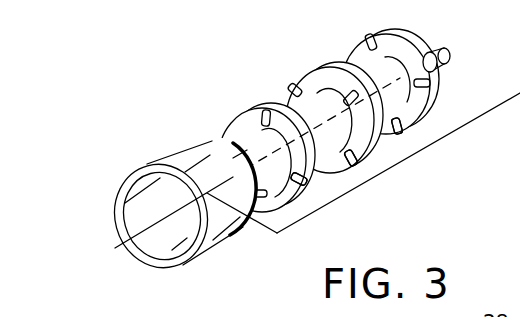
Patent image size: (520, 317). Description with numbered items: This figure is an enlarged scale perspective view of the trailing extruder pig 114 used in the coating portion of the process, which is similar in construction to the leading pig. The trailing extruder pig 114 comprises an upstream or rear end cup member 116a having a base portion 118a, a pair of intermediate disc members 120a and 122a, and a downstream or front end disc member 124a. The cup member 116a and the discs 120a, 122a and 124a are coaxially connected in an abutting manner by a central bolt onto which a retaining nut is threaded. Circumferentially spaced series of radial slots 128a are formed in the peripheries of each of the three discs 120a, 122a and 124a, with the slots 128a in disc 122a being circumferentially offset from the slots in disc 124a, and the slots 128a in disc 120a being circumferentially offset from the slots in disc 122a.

The trailing extruder pig 114 is at (312, 46).
The rear end cup member 116a is at (179, 192).
The base portion 118a is at (237, 155).
The intermediate disc member 120a is at (247, 110).
The intermediate disc member 122a is at (292, 87).
The front end disc member 124a is at (405, 34).
The radial slots 128a is at (305, 180).